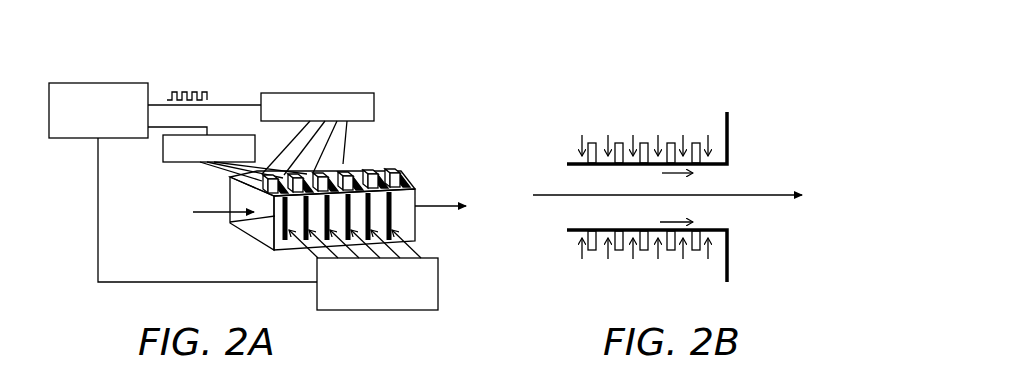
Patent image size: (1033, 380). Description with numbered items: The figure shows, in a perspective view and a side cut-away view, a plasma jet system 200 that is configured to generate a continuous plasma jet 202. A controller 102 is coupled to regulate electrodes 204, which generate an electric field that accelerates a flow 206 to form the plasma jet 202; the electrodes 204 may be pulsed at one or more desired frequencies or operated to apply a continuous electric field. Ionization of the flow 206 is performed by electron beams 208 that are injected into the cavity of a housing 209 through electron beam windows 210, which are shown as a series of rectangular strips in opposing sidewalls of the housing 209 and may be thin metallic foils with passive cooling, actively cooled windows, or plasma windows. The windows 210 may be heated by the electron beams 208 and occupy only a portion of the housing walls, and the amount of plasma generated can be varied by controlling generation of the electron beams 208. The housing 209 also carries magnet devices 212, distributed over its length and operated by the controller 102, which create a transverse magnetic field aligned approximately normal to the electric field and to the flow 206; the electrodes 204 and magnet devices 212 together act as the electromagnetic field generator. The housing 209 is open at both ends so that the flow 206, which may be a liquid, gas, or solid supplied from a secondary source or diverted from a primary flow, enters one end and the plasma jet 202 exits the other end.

In FIG. 2A, the controller 102 is at (117, 83).
In FIG. 2A, the plasma jet system 200 is at (112, 40).
In FIG. 2B, the plasma jet system 200 is at (631, 75).
In FIG. 2A, the plasma jet 202 is at (443, 198).
In FIG. 2B, the plasma jet 202 is at (760, 193).
In FIG. 2A, the electrodes 204 is at (347, 170).
In FIG. 2A, the flow 206 is at (203, 218).
In FIG. 2B, the flow 206 is at (592, 198).
In FIG. 2A, the electron beams 208 is at (430, 258).
In FIG. 2B, the electron beams 208 is at (625, 267).
In FIG. 2A, the housing 209 is at (409, 183).
In FIG. 2B, the housing 209 is at (577, 163).
In FIG. 2A, the electron beam windows 210 is at (278, 250).
In FIG. 2A, the magnet devices 212 is at (398, 170).
In FIG. 2B, the magnet devices 212 is at (644, 143).